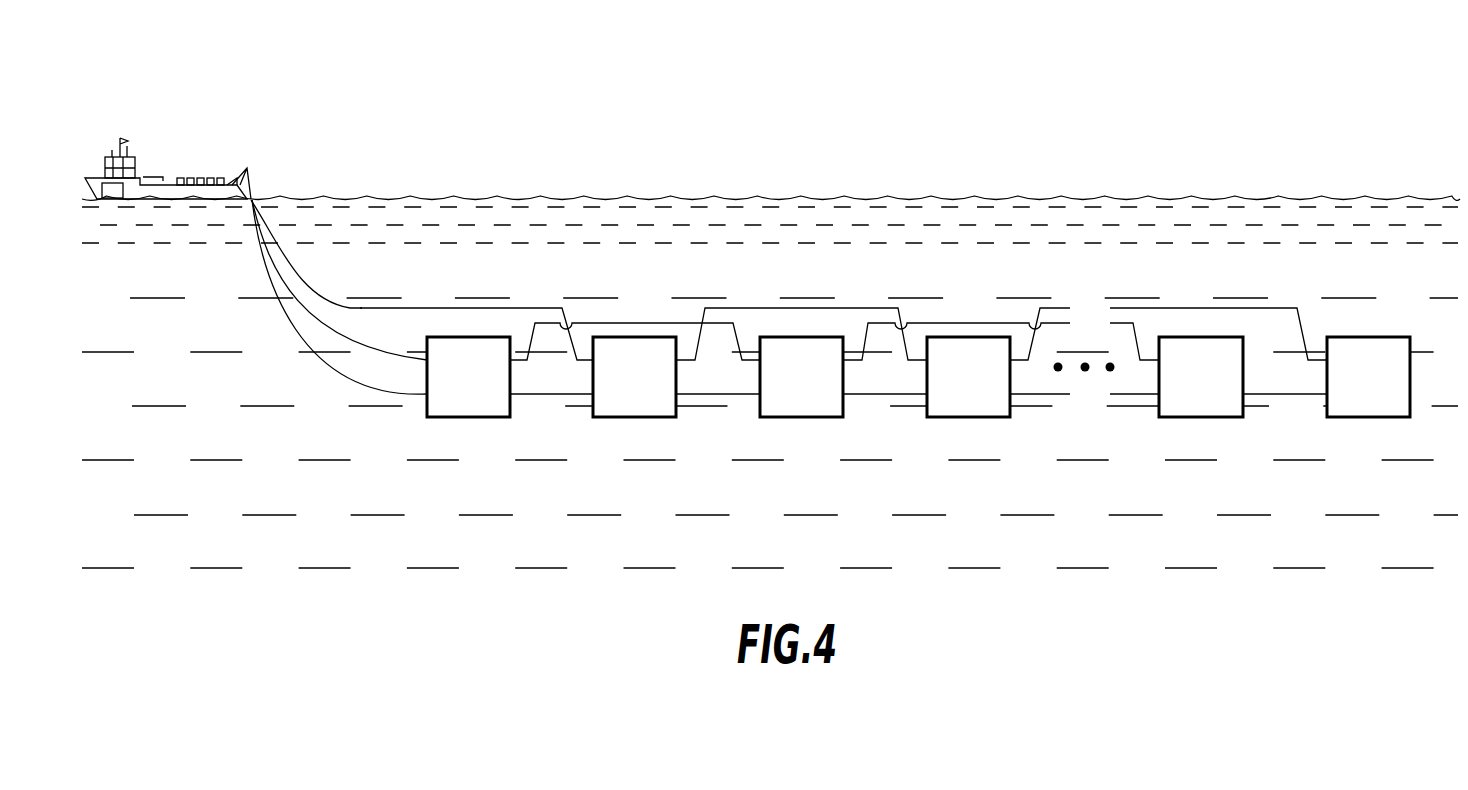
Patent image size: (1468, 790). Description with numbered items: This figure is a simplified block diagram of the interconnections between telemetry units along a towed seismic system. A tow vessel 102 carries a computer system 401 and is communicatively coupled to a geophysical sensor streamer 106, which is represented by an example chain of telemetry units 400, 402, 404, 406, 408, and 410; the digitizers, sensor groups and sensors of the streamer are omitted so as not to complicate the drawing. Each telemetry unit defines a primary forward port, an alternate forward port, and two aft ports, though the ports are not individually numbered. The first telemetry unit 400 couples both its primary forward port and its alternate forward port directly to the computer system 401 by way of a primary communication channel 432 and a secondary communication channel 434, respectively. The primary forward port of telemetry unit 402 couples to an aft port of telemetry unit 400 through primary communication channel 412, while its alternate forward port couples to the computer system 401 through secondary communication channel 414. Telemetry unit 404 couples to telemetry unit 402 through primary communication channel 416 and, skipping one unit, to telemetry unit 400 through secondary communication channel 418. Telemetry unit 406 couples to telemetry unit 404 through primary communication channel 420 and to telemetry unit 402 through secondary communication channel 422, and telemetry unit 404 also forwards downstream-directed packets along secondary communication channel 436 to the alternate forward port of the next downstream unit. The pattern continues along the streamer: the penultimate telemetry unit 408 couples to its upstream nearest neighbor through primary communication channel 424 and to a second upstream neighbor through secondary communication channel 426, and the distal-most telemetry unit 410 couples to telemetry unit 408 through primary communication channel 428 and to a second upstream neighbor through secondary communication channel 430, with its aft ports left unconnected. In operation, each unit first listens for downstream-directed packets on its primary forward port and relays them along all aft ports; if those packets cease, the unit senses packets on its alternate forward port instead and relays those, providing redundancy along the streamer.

The tow vessel 102 is at (213, 183).
The computer system 401 is at (118, 187).
The geophysical sensor streamer 106 is at (260, 373).
The primary communication channel 432 is at (337, 370).
The secondary communication channel 434 is at (308, 315).
The secondary communication channel 414 is at (466, 308).
The secondary communication channel 418 is at (667, 322).
The secondary communication channel 422 is at (828, 308).
The secondary communication channel 436 is at (953, 323).
The secondary communication channel 426 is at (1115, 322).
The secondary communication channel 430 is at (1235, 308).
The primary communication channel 412 is at (537, 395).
The primary communication channel 416 is at (730, 395).
The primary communication channel 420 is at (882, 395).
The primary communication channel 424 is at (1040, 395).
The primary communication channel 428 is at (1308, 395).
The telemetry unit 400 is at (491, 388).
The telemetry unit 402 is at (657, 388).
The telemetry unit 404 is at (824, 388).
The telemetry unit 406 is at (991, 388).
The telemetry unit 408 is at (1224, 388).
The telemetry unit 410 is at (1391, 388).